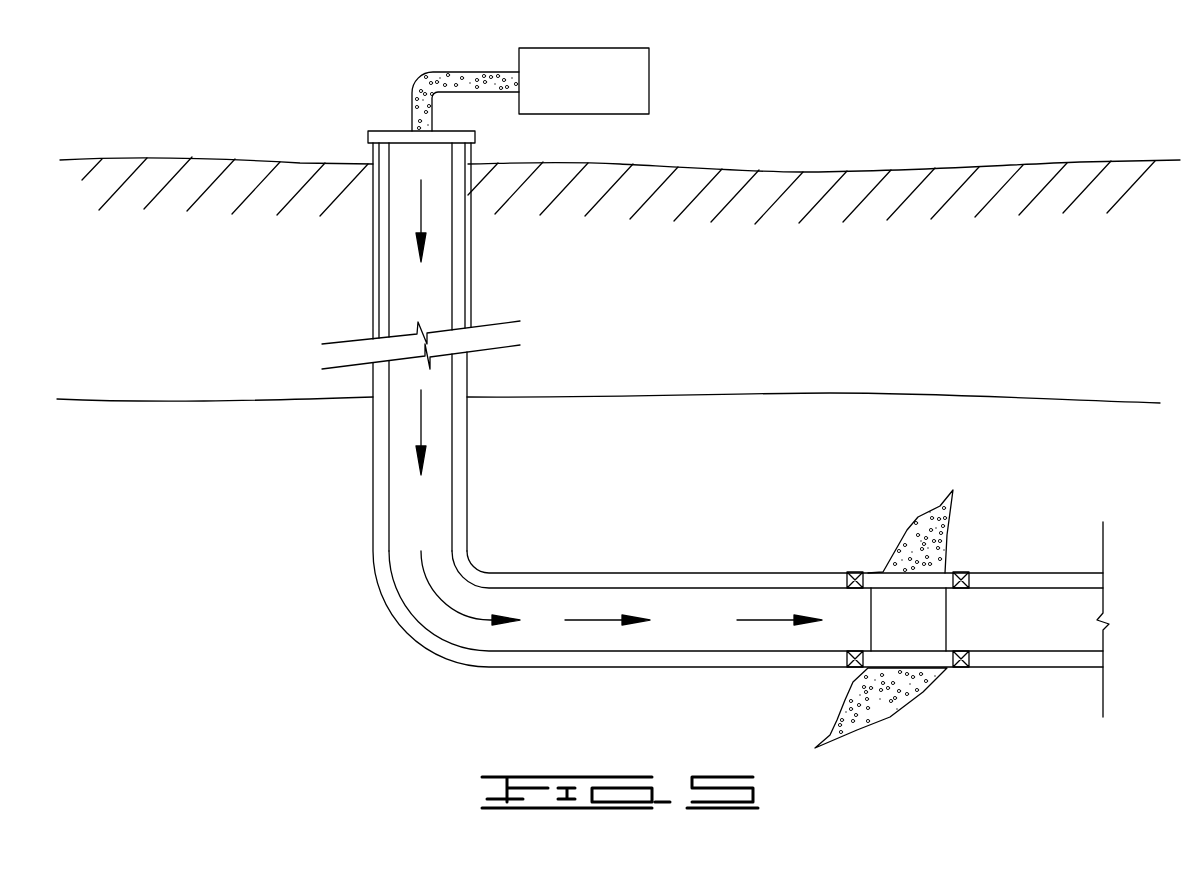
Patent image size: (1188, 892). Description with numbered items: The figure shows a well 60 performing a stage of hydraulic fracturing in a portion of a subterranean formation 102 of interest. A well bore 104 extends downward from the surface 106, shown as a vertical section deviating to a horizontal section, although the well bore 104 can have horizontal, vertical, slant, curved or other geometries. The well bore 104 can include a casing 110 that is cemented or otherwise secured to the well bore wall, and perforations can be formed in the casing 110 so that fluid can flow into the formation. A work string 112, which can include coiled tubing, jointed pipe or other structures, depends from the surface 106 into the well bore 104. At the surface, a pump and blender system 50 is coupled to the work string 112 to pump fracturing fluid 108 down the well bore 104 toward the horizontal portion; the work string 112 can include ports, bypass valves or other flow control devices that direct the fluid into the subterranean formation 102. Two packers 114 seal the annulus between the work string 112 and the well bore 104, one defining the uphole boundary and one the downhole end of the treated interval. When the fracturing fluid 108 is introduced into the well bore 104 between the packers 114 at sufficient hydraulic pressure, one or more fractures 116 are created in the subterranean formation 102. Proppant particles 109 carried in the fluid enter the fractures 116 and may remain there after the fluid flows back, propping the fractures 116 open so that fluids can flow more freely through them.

The pump and blender system 50 is at (598, 91).
The well 60 is at (382, 665).
The subterranean formation 102 is at (814, 437).
The well bore 104 is at (383, 278).
The surface 106 is at (1033, 167).
The fracturing fluid 108 is at (410, 110).
The proppant particles 109 is at (472, 75).
The casing 110 is at (373, 320).
The work string 112 is at (388, 493).
The packers 114 is at (857, 573).
The fractures 116 is at (889, 514).